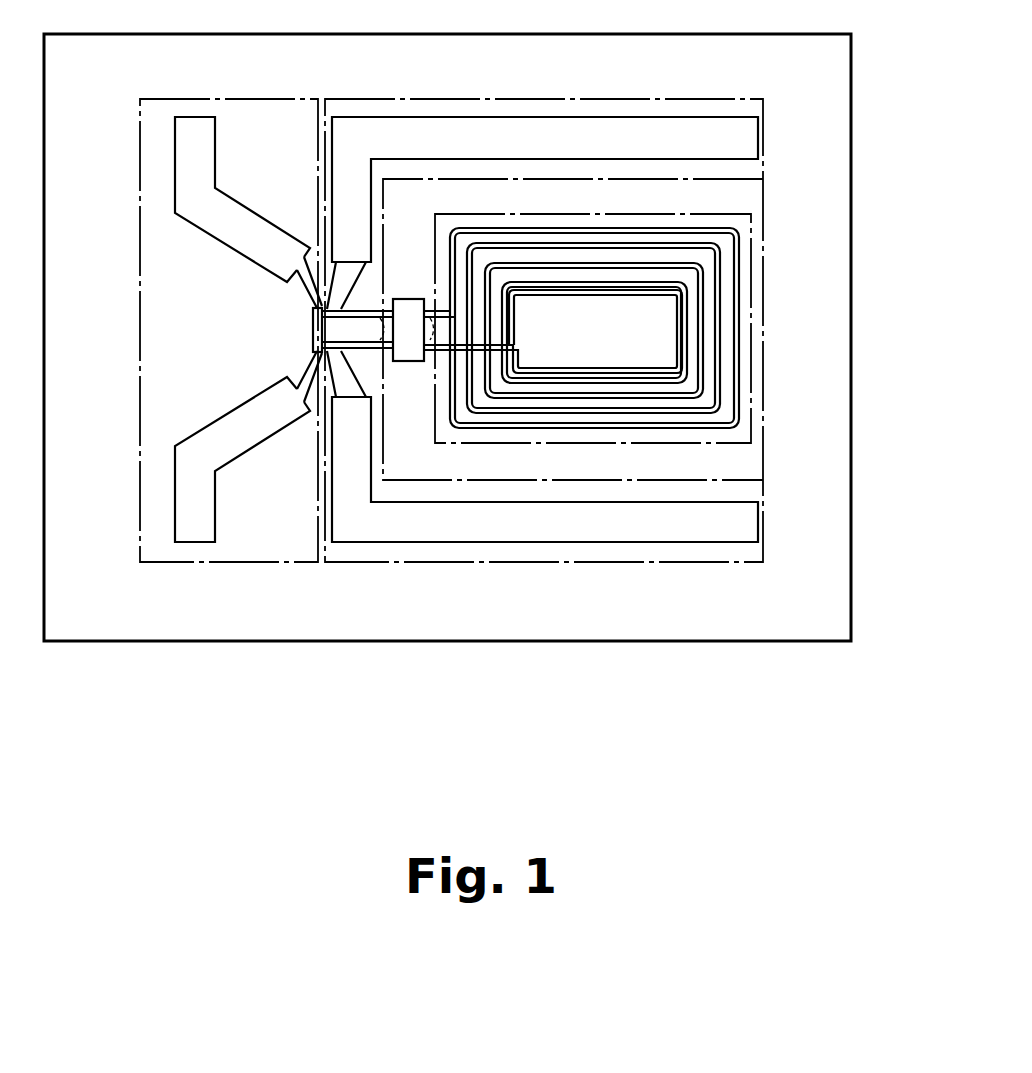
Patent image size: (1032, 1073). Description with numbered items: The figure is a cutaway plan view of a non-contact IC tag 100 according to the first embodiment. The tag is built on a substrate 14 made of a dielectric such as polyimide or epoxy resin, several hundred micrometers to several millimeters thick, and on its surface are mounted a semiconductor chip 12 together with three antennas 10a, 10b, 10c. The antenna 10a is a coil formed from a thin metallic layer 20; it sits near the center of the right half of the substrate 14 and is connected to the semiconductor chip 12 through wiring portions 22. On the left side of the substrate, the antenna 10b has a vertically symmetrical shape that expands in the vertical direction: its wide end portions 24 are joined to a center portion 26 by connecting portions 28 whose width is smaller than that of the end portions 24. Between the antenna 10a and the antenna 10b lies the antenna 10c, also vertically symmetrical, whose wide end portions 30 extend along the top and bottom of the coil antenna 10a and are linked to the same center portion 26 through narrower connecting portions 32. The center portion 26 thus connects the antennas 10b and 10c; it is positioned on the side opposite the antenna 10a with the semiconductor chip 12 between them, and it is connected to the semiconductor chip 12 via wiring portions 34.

The non-contact IC tag 100 is at (492, 740).
The substrate 14 is at (852, 113).
The antenna 10a is at (752, 258).
The antenna 10b is at (140, 322).
The antenna 10c is at (716, 99).
The semiconductor chip 12 is at (409, 362).
The thin metallic layer 20 is at (741, 349).
The wiring portions 22 is at (438, 310).
The end portions 24 is at (172, 158).
The center portion 26 is at (313, 332).
The connecting portions 28 is at (307, 284).
The end portions 30 is at (625, 117).
The connecting portions 32 is at (350, 312).
The wiring portions 34 is at (390, 341).